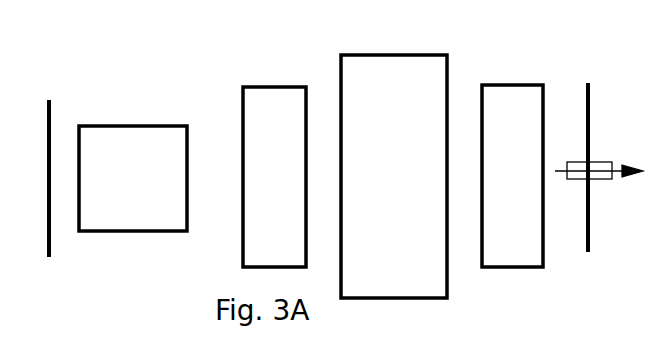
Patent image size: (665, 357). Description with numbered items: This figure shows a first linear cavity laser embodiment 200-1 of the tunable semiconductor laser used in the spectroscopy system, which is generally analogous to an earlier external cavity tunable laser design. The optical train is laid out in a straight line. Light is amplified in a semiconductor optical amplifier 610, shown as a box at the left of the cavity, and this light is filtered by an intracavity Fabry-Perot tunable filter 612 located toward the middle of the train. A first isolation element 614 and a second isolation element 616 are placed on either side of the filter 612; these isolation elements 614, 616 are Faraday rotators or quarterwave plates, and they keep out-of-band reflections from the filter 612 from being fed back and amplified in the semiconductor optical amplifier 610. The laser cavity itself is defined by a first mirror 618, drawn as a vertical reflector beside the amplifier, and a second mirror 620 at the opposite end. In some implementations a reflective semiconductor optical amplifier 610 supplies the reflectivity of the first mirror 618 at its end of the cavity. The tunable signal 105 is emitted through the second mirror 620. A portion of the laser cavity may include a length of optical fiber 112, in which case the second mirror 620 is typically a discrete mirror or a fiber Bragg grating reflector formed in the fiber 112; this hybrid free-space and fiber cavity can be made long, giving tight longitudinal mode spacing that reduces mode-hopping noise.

The first mirror 618 is at (51, 101).
The semiconductor optical amplifier 610 is at (110, 126).
The first linear cavity laser embodiment 200-1 is at (165, 266).
The first isolation element 614 is at (265, 87).
The Fabry-Perot tunable filter 612 is at (376, 55).
The second isolation element 616 is at (495, 85).
The second mirror 620 is at (589, 110).
The optical fiber 112 is at (596, 162).
The tunable signal 105 is at (594, 180).